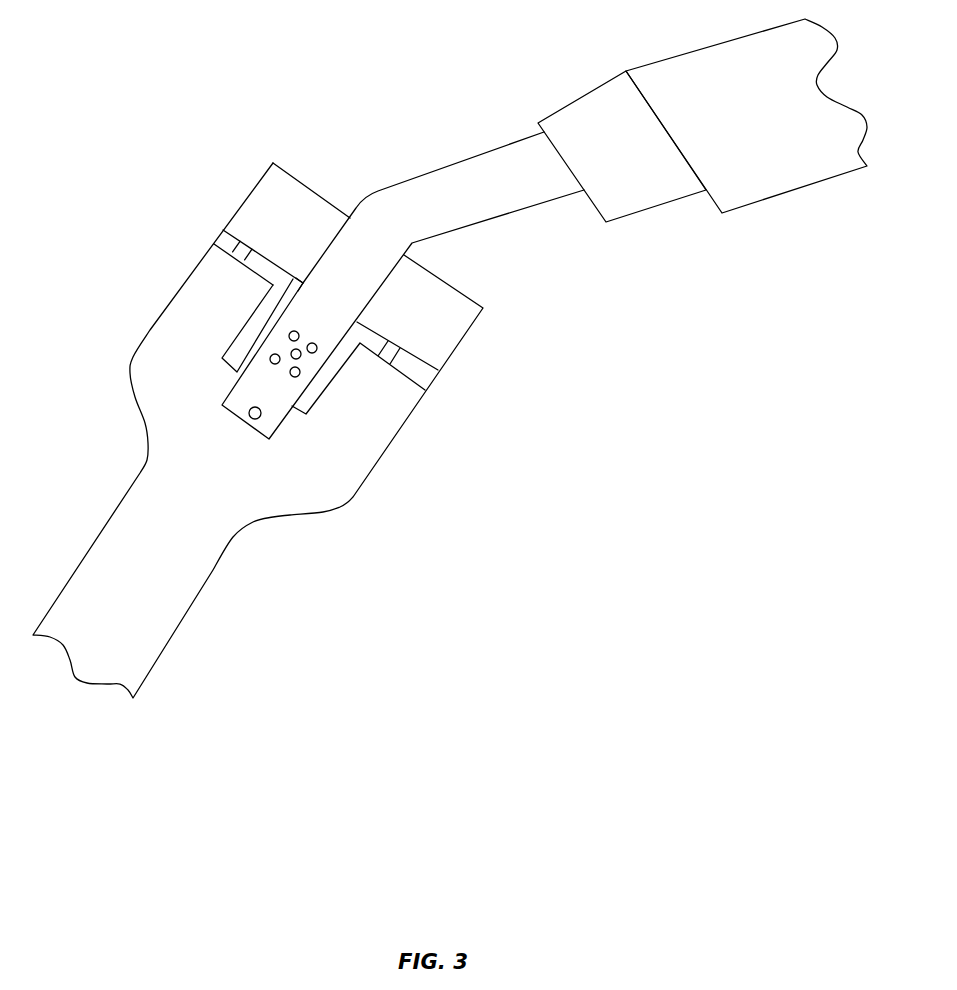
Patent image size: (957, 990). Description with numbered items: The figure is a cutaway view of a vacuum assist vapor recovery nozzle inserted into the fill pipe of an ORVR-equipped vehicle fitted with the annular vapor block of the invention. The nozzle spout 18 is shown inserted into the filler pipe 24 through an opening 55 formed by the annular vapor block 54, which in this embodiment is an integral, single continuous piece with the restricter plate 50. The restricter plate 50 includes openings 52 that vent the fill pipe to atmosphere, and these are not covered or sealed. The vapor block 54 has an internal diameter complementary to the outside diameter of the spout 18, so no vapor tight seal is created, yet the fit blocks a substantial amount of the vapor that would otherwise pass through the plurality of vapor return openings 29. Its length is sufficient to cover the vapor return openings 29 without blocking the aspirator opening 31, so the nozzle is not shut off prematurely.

The nozzle spout 18 is at (455, 233).
The filler pipe 24 is at (353, 508).
The vapor return openings 29 is at (304, 360).
The aspirator opening 31 is at (238, 422).
The restricter plate 50 is at (208, 240).
The openings 52 is at (235, 248).
The annular vapor block 54 is at (250, 316).
The opening 55 is at (301, 281).